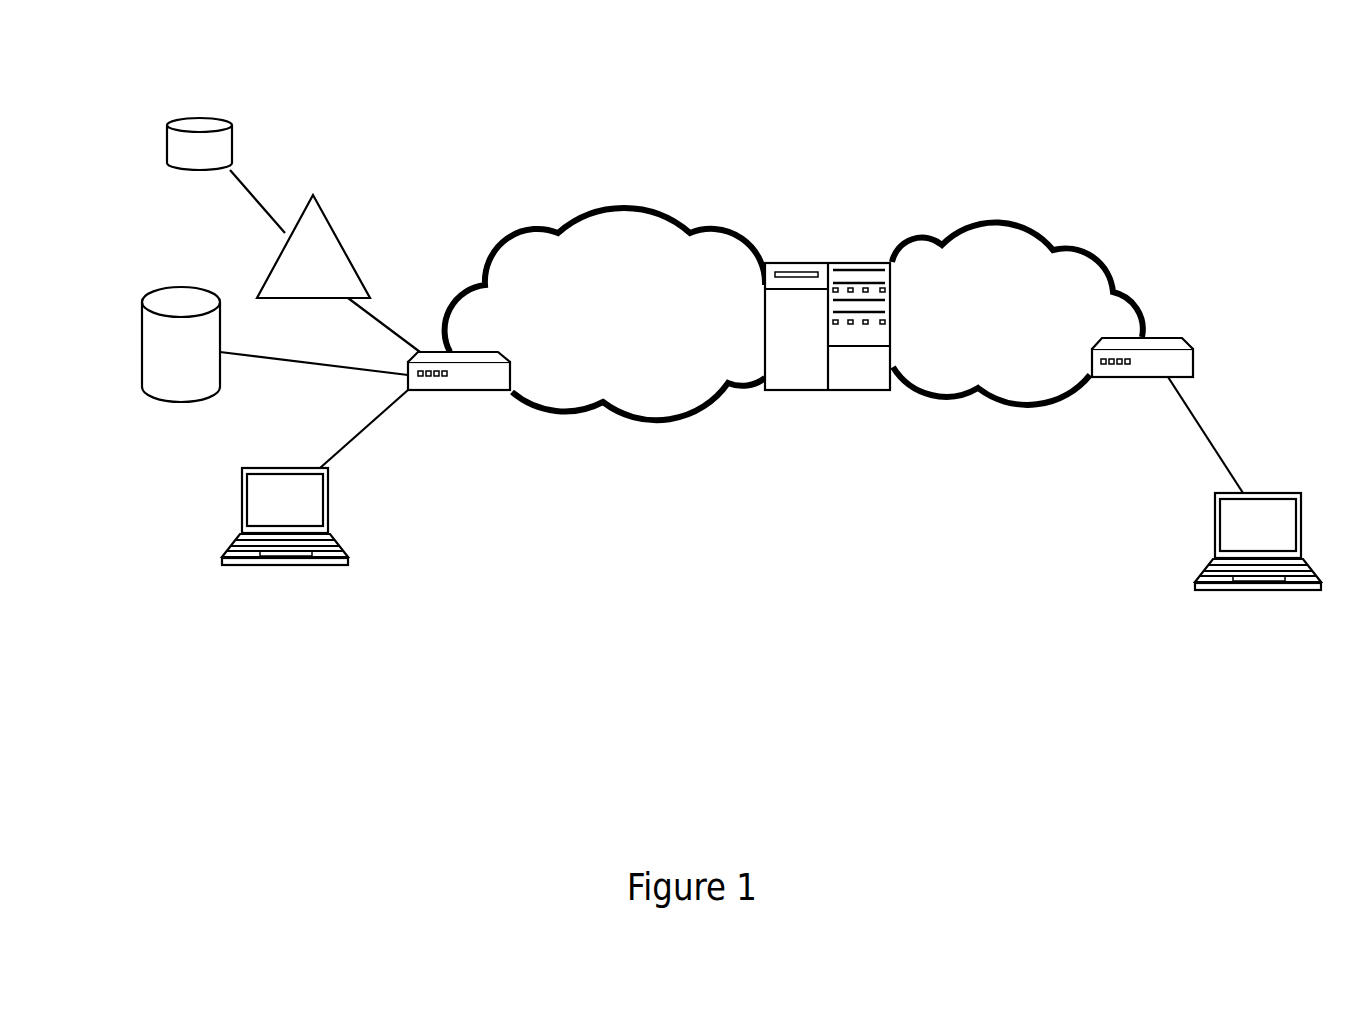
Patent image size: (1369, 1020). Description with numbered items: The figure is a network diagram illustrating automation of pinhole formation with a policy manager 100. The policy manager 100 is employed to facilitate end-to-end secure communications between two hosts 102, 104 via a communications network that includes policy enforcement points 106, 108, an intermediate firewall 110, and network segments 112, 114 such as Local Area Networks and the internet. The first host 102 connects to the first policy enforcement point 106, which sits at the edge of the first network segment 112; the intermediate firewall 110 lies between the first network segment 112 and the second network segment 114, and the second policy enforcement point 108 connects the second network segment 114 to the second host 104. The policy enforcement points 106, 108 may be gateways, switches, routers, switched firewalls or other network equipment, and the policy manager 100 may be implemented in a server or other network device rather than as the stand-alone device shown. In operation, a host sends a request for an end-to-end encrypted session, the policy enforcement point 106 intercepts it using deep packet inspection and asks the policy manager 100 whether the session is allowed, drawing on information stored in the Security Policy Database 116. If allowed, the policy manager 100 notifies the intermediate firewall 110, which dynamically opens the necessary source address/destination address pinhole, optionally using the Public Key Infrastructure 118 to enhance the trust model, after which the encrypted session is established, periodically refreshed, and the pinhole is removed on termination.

The policy manager 100 is at (410, 240).
The host 102 is at (281, 575).
The host 104 is at (1270, 602).
The policy enforcement point 106 is at (415, 433).
The policy enforcement point 108 is at (1167, 419).
The intermediate firewall 110 is at (836, 389).
The network segment 112 is at (663, 344).
The network segment 114 is at (993, 324).
The Security Policy Database 116 is at (202, 136).
The Public Key Infrastructure 118 is at (258, 319).